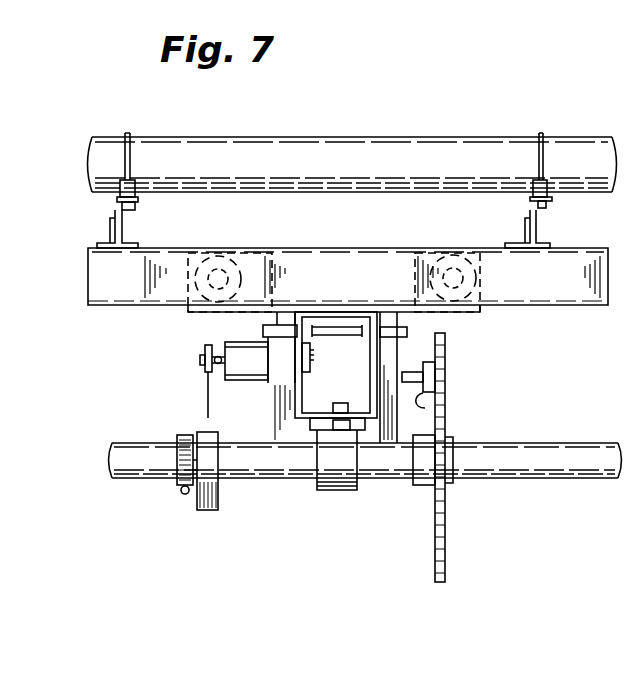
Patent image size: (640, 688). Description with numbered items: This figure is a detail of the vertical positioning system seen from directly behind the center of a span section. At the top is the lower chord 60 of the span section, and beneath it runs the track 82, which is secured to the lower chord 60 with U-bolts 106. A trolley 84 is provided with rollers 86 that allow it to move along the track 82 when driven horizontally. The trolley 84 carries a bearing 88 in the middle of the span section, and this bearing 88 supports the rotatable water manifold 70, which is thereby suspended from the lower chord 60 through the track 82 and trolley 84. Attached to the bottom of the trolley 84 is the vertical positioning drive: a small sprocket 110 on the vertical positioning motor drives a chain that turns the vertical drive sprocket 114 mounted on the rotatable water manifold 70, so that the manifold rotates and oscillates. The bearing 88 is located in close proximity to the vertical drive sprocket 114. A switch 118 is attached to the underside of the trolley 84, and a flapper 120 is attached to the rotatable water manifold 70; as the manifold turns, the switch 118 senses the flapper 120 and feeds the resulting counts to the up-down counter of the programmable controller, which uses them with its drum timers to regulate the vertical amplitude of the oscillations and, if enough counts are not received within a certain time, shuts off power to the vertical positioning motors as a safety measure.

The lower chord 60 is at (445, 137).
The U-bolts 106 is at (542, 133).
The trolley 84 is at (377, 251).
The rollers 86 is at (457, 272).
The track 82 is at (553, 303).
The bearing 88 is at (337, 492).
The switch 118 is at (243, 333).
The rotatable water manifold 70 is at (530, 442).
The flapper 120 is at (205, 512).
The small sprocket 110 is at (430, 408).
The vertical drive sprocket 114 is at (445, 533).